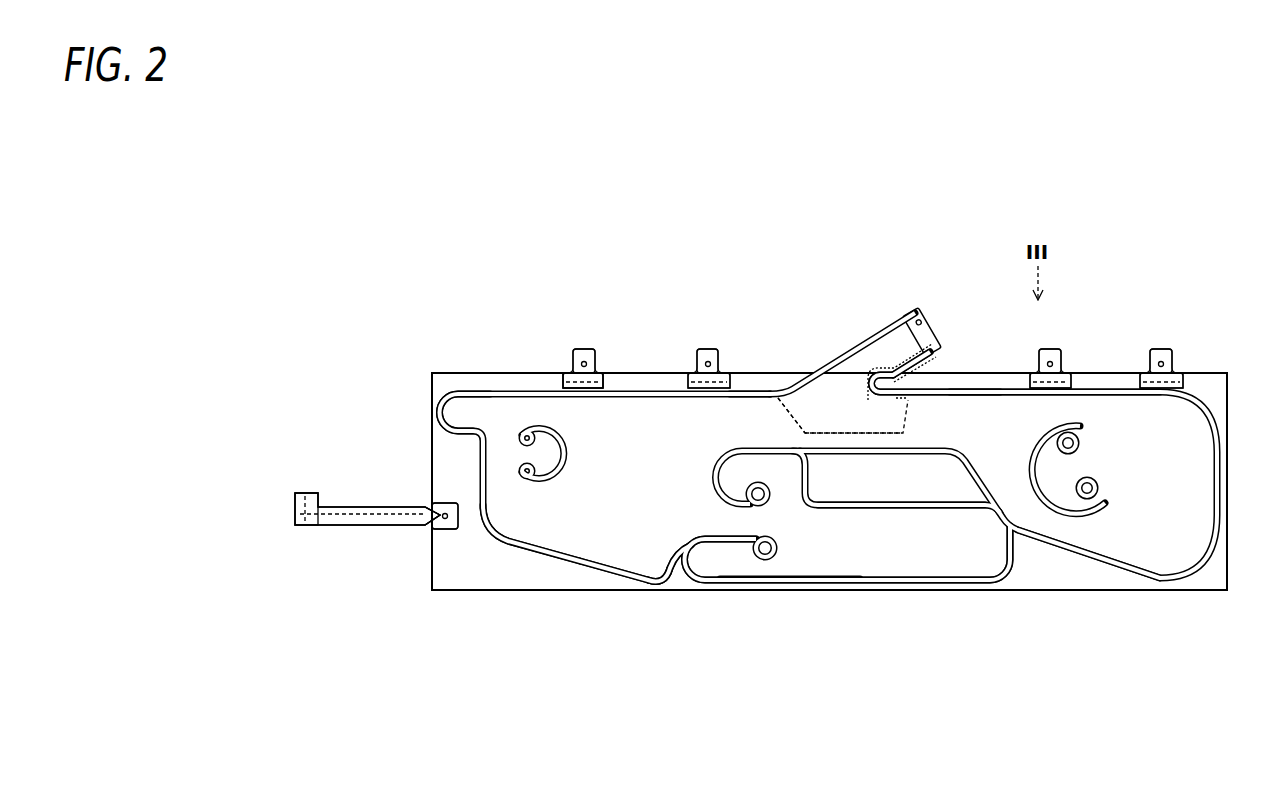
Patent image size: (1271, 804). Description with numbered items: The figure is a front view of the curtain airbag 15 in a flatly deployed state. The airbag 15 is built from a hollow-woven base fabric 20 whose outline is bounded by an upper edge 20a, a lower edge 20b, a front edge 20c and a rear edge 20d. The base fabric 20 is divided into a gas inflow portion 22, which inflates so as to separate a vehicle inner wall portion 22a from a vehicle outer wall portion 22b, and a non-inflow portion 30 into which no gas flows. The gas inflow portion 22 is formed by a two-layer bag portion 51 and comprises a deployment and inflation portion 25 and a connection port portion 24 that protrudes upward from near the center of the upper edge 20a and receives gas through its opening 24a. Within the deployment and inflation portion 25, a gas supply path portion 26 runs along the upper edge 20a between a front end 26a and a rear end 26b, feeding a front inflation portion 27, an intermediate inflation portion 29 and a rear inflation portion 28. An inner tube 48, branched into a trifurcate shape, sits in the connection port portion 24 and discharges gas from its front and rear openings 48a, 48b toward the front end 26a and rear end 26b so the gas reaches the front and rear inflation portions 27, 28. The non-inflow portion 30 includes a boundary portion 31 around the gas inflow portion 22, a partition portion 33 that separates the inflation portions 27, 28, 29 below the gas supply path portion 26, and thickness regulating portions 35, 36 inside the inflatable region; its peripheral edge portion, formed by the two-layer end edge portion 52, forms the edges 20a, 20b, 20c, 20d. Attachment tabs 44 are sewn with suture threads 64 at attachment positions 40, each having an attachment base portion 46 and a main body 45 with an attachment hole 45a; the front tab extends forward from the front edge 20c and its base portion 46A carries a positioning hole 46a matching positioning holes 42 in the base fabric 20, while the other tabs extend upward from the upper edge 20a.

The airbag 15 is at (432, 268).
The base fabric 20 is at (497, 594).
The upper edge 20a is at (492, 386).
The lower edge 20b is at (640, 592).
The front edge 20c is at (430, 596).
The rear edge 20d is at (1217, 588).
The gas inflow portion 22 is at (643, 722).
The vehicle inner wall portion 22a is at (582, 565).
The vehicle outer wall portion 22b is at (605, 569).
The connection port portion 24 is at (897, 345).
The opening 24a is at (933, 314).
The deployment and inflation portion 25 is at (707, 732).
The gas supply path portion 26 is at (937, 398).
The front end 26a is at (745, 398).
The rear end 26b is at (973, 398).
The front inflation portion 27 is at (670, 556).
The rear inflation portion 28 is at (1058, 534).
The intermediate inflation portion 29 is at (848, 552).
The non-inflow portion 30 is at (450, 586).
The boundary portion 31 is at (495, 532).
The partition portion 33 is at (945, 508).
The thickness regulating portion 35 is at (565, 460).
The thickness regulating portion 36 is at (1034, 472).
The attachment position 40 is at (604, 366).
The positioning hole 42 is at (556, 382).
The attachment tab 44 is at (585, 342).
The main body 45 is at (580, 372).
The attachment hole 45a is at (594, 386).
The attachment base portion 46 is at (601, 389).
The positioning hole 46a is at (426, 512).
The attachment base portion 46A is at (428, 528).
The inner tube 48 is at (849, 380).
The front opening 48a is at (790, 394).
The rear opening 48b is at (908, 404).
The bag portion 51 is at (650, 542).
The end edge portion 52 is at (457, 390).
The suture thread 64 is at (580, 390).